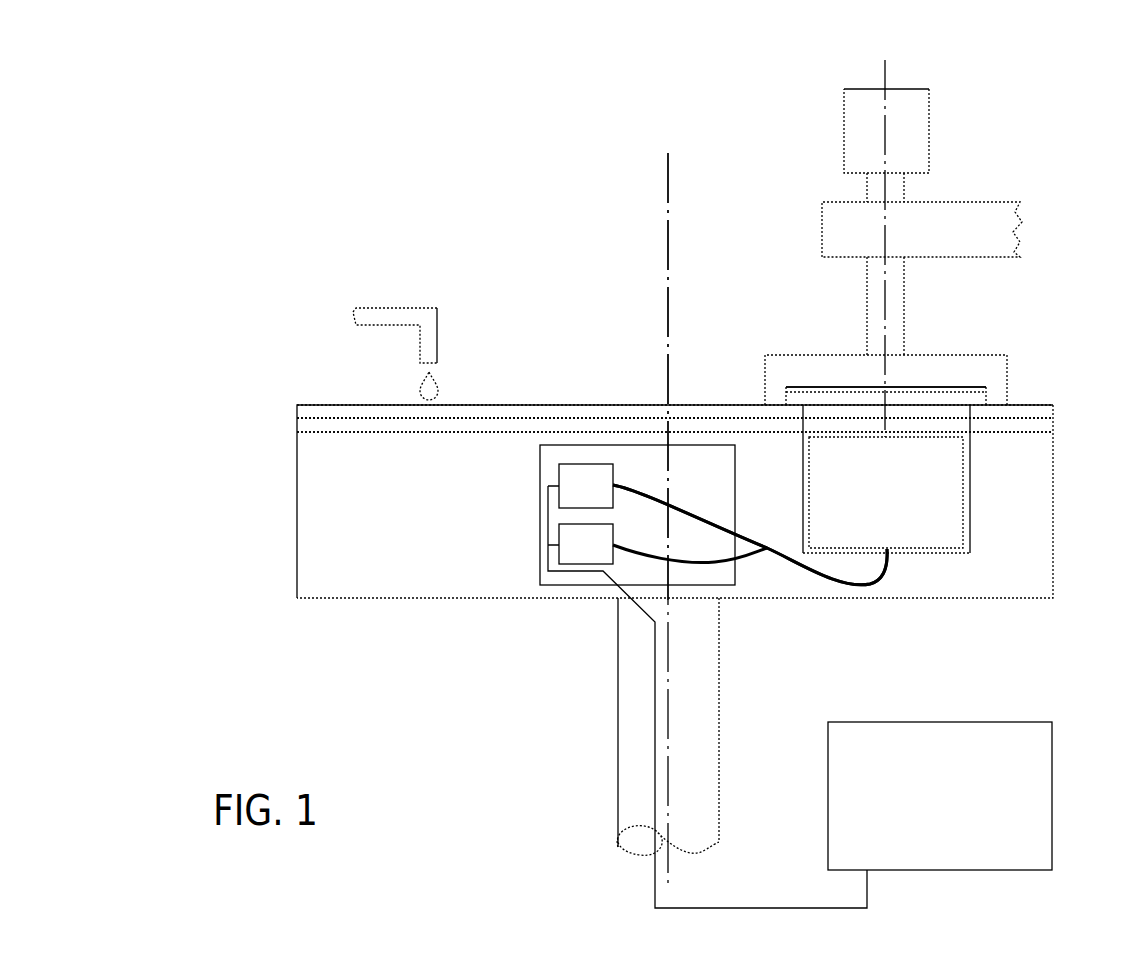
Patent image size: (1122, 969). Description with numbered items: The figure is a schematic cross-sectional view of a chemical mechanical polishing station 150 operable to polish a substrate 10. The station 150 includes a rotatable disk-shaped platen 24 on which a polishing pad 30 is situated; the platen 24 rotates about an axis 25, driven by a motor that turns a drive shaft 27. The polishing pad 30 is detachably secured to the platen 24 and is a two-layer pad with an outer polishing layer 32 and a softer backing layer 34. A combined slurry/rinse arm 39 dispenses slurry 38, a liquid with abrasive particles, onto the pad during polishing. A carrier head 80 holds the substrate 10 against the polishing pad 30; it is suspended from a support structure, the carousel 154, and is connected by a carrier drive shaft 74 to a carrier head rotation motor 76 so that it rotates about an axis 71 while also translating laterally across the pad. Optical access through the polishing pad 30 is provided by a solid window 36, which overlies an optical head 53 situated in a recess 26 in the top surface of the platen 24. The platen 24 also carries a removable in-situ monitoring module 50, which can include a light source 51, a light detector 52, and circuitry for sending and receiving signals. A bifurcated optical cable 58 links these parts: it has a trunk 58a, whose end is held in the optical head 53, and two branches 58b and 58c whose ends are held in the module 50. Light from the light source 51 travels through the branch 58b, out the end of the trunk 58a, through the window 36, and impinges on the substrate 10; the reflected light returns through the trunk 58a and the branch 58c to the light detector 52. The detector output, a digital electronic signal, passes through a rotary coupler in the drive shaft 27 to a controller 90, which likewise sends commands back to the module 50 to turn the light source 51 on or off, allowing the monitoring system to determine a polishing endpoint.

The substrate 10 is at (985, 400).
The platen 24 is at (297, 513).
The axis 25 is at (665, 262).
The recess 26 is at (962, 553).
The drive shaft 27 is at (618, 713).
The polishing pad 30 is at (290, 405).
The polishing layer 32 is at (1060, 410).
The backing layer 34 is at (1058, 432).
The solid window 36 is at (911, 428).
The slurry 38 is at (420, 388).
The slurry/rinse arm 39 is at (405, 308).
The in-situ monitoring module 50 is at (535, 555).
The light source 51 is at (600, 496).
The light detector 52 is at (600, 556).
The optical head 53 is at (850, 535).
The bifurcated optical cable 58 is at (780, 572).
The trunk 58a is at (833, 580).
The branch 58b is at (690, 505).
The branch 58c is at (639, 567).
The axis 71 is at (870, 327).
The carrier drive shaft 74 is at (904, 192).
The carrier head rotation motor 76 is at (844, 148).
The carrier head 80 is at (1000, 355).
The controller 90 is at (1010, 857).
The polishing station 150 is at (445, 200).
The carousel 154 is at (822, 232).